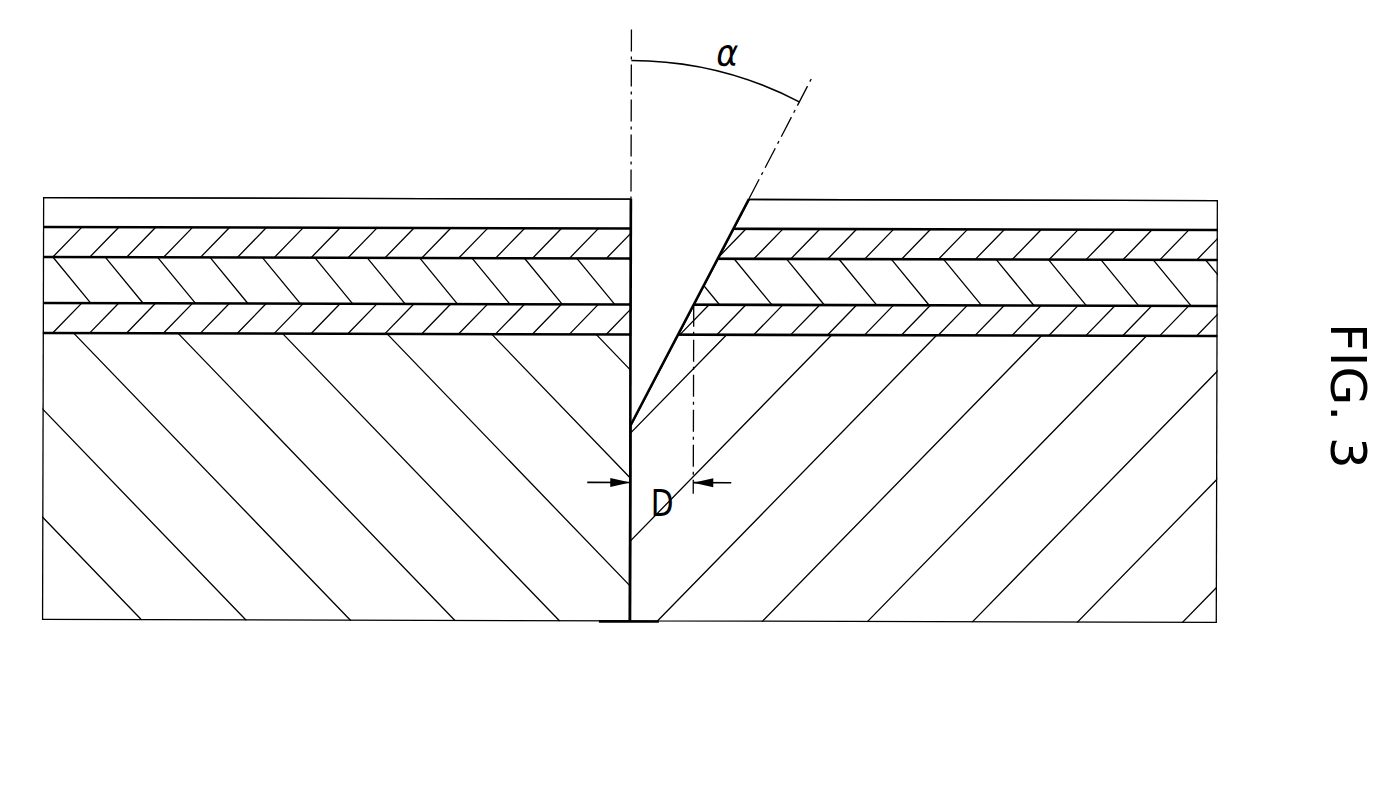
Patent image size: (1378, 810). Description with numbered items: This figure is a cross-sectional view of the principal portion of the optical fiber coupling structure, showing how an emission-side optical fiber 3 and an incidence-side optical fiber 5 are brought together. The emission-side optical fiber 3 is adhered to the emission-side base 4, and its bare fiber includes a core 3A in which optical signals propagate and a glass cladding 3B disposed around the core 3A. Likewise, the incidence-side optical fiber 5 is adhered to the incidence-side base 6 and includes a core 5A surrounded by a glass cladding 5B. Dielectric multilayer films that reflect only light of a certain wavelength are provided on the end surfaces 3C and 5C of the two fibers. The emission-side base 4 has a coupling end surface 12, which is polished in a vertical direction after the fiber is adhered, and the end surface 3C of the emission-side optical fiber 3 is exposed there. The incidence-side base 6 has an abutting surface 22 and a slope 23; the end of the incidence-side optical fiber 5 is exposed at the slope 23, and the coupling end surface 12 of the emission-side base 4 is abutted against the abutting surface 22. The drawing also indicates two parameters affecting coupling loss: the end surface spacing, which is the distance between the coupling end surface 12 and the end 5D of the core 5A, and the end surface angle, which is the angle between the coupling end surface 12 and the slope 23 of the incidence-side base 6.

The emission-side optical fiber 3 is at (116, 226).
The core 3A is at (234, 256).
The cladding 3B is at (352, 226).
The end surface 3C is at (632, 286).
The emission-side base 4 is at (425, 196).
The incidence-side optical fiber 5 is at (1135, 227).
The core 5A is at (890, 258).
The cladding 5B is at (1012, 228).
The end surface 5C is at (708, 271).
The end of the core 5D is at (698, 306).
The incidence-side base 6 is at (1067, 197).
The coupling end surface 12 is at (632, 212).
The abutting surface 22 is at (630, 606).
The slope 23 is at (737, 220).